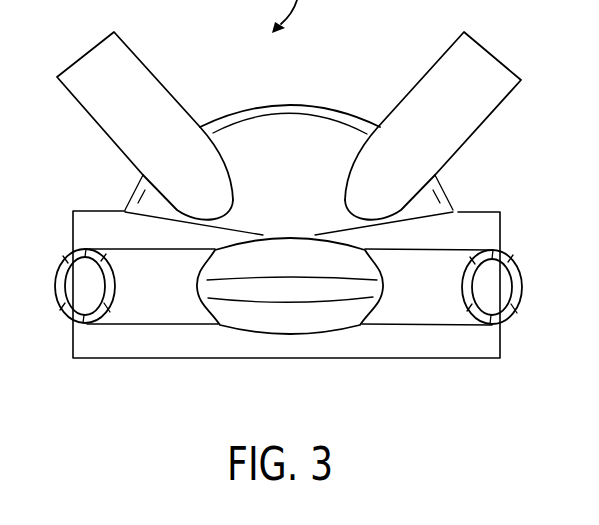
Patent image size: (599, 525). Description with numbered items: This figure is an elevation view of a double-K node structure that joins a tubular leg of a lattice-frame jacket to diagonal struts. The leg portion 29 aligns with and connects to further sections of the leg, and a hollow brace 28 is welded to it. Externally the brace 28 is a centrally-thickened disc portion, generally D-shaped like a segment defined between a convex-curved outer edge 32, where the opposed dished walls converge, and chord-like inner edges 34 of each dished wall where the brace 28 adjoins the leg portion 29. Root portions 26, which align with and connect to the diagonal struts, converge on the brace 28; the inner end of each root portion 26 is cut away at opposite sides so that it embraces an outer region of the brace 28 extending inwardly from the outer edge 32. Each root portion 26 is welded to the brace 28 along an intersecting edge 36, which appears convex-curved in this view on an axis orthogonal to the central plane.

The root portion 26 is at (137, 72).
The hollow brace 28 is at (307, 123).
The leg portion 29 is at (482, 227).
The convex-curved outer edge 32 is at (232, 113).
The chord-like inner edge 34 is at (260, 240).
The intersecting edge 36 is at (230, 180).